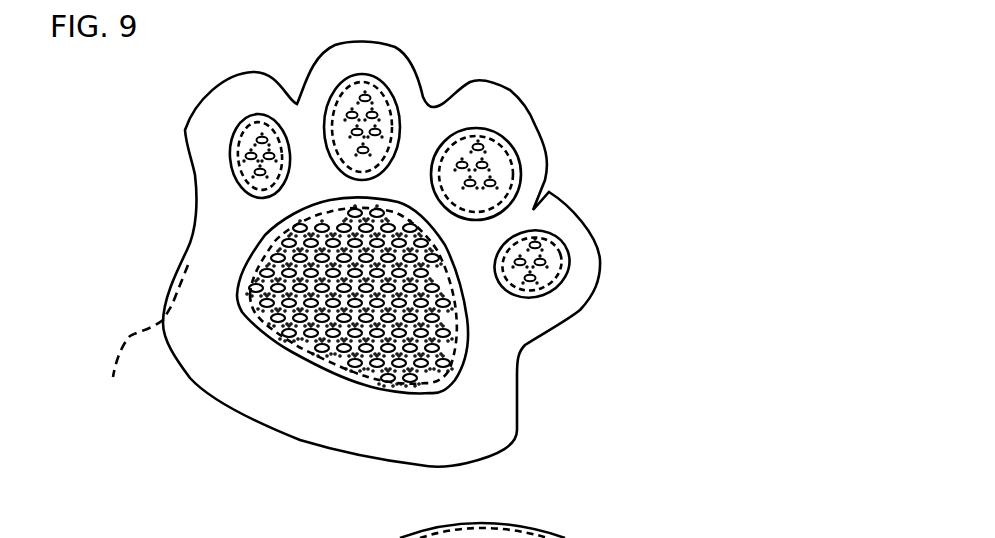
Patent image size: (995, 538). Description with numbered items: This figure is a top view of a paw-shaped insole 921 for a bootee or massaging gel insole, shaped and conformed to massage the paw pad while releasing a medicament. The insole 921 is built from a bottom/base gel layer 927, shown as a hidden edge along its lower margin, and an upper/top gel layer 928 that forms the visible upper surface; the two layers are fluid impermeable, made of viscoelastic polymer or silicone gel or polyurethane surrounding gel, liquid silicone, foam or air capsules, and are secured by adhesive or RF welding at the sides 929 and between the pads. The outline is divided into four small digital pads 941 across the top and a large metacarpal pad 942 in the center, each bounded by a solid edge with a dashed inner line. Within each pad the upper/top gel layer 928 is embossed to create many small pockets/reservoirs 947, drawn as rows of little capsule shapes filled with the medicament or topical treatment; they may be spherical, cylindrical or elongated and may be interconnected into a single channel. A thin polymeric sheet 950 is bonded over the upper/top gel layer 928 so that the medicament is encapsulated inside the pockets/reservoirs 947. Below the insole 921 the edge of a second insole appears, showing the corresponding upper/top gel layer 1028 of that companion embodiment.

The insole 921 is at (222, 218).
The bottom/base gel layer 927 is at (135, 338).
The upper/top gel layer 928 is at (546, 173).
The sides 929 is at (288, 442).
The digital pads 941 is at (270, 127).
The metacarpal pad 942 is at (460, 320).
The pockets/reservoirs 947 is at (522, 284).
The thin polymeric sheet 950 is at (433, 372).
The upper/top gel layer 1028 is at (677, 537).